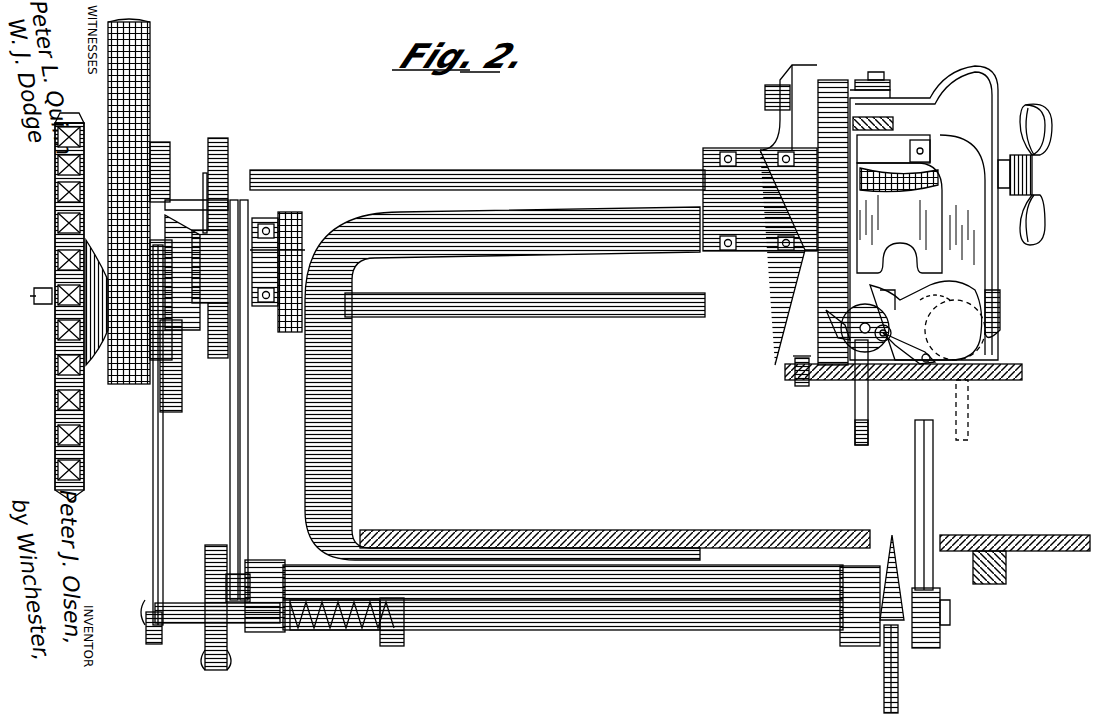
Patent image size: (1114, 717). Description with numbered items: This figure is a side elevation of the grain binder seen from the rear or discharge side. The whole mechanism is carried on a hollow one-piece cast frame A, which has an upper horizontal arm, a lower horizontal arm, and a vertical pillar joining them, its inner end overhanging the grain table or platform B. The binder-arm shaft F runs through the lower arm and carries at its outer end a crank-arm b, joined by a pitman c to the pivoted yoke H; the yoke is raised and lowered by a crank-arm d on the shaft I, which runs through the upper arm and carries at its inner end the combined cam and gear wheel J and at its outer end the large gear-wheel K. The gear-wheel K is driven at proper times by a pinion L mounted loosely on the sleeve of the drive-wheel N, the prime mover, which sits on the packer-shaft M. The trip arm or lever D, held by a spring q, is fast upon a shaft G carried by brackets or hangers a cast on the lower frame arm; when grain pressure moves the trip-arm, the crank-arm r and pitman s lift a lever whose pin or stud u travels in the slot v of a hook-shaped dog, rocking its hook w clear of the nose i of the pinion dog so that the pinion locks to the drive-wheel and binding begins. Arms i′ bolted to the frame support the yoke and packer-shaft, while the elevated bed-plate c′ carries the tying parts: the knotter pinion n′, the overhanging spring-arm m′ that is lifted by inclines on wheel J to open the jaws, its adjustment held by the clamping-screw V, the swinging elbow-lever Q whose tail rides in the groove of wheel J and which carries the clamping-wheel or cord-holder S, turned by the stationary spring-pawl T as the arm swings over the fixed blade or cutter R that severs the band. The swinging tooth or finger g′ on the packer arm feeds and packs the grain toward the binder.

The drive-wheel N is at (52, 232).
The gear-wheel K is at (130, 201).
The pinion L is at (154, 277).
The crank-arm d is at (205, 178).
The yoke H is at (228, 150).
The shaft I is at (205, 196).
The nose i is at (277, 272).
The pitman s is at (147, 444).
The pitman c is at (560, 456).
The frame A is at (477, 365).
The packer-shaft M is at (525, 291).
The grain table or platform B is at (615, 527).
The shaft G is at (563, 611).
The spring q is at (335, 630).
The brackets or hangers a is at (574, 590).
The crank-arm r is at (210, 632).
The crank-arm b is at (207, 607).
The shaft F is at (245, 578).
The combined cam and gear wheel J is at (775, 215).
The spring-arm m′ is at (924, 213).
The pinion n′ is at (883, 123).
The elbow-lever Q is at (899, 206).
The arms i′ is at (893, 149).
The clamping-screw V is at (1035, 174).
The bed-plate c′ is at (903, 383).
The tooth or finger g′ is at (911, 392).
The clamping-wheel or cord-holder S is at (890, 320).
The hook w is at (836, 327).
The pin or stud u is at (883, 343).
The slot v is at (935, 305).
The spring-pawl T is at (909, 348).
The blade or cutter R is at (935, 320).
The trip arm or lever D is at (935, 492).